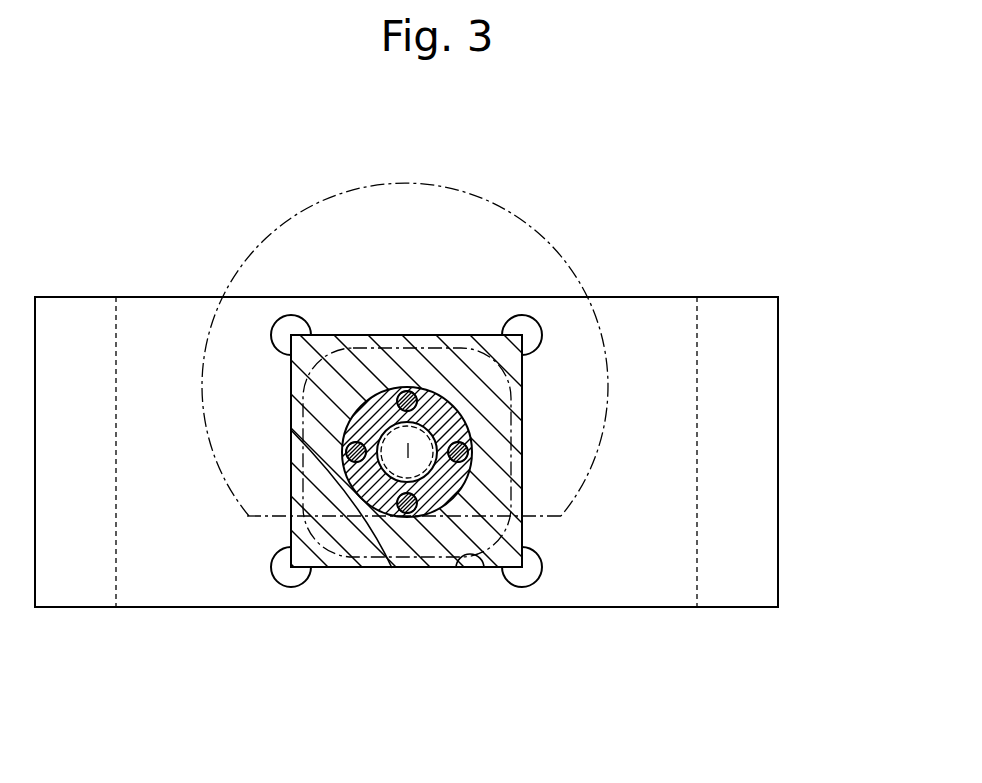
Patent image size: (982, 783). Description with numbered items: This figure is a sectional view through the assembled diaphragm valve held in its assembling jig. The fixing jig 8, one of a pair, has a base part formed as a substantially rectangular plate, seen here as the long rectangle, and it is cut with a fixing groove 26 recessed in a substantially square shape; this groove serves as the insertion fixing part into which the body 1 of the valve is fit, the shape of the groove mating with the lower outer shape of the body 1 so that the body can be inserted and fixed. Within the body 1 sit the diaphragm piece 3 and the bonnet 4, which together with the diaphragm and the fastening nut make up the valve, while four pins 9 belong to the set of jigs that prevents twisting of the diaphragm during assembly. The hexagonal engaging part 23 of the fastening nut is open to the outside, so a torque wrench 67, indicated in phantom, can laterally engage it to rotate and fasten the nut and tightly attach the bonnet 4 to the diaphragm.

The body 1 is at (507, 347).
The diaphragm piece 3 is at (413, 415).
The bonnet 4 is at (437, 428).
The fixing jig 8 is at (757, 467).
The pins 9 is at (404, 392).
The engaging part 23 is at (335, 555).
The fixing groove 26 is at (457, 570).
The torque wrench 67 is at (510, 235).